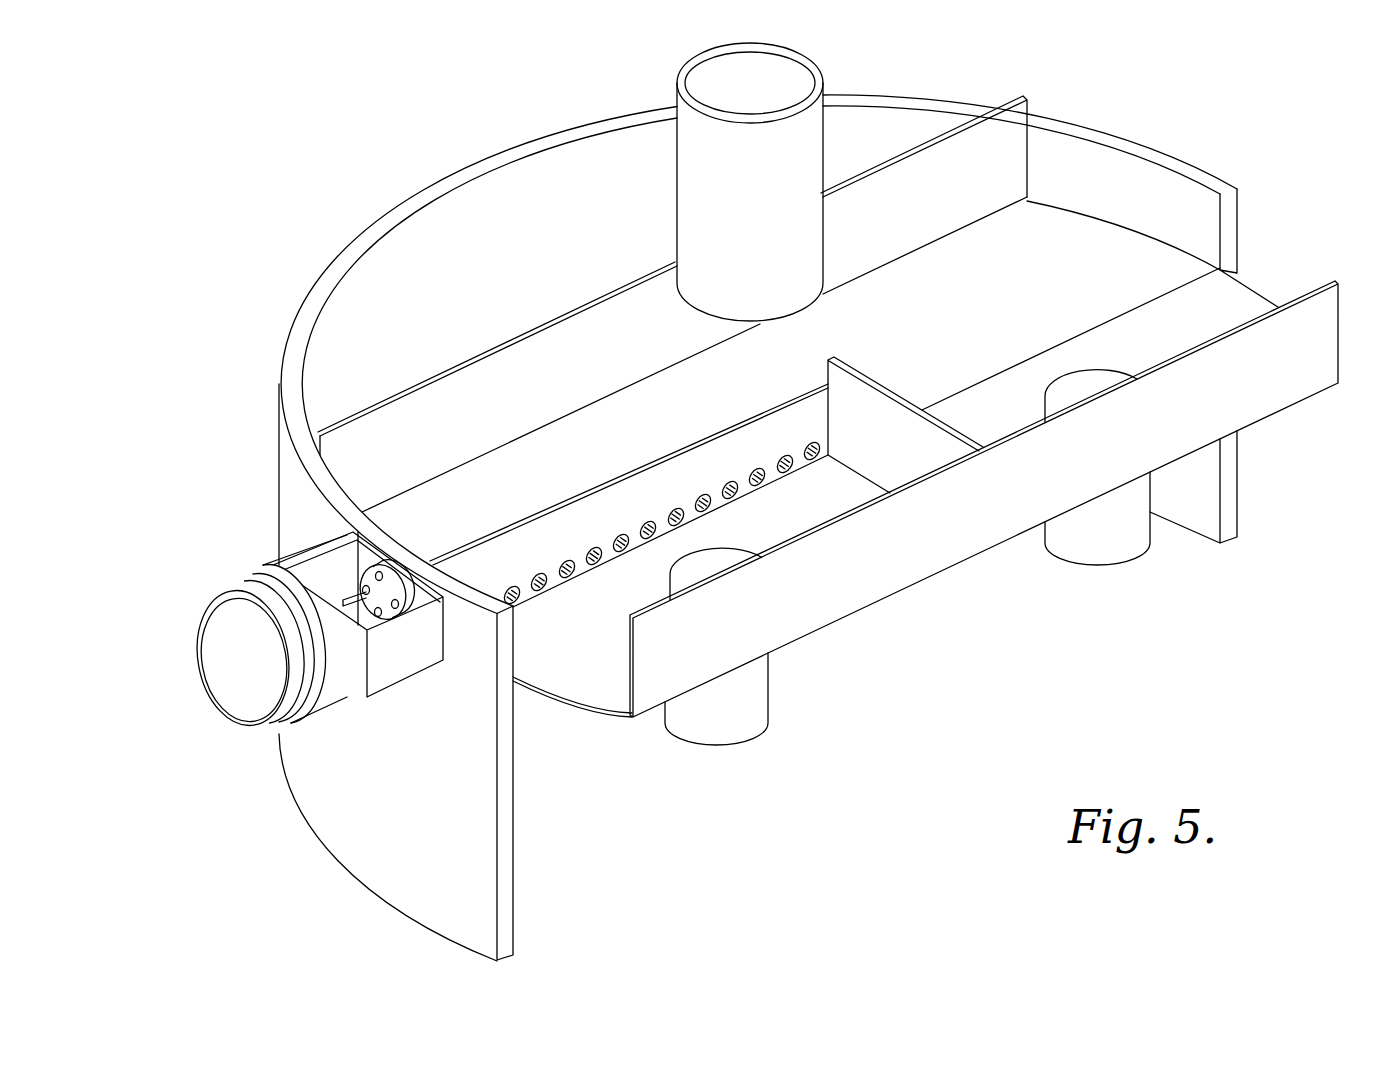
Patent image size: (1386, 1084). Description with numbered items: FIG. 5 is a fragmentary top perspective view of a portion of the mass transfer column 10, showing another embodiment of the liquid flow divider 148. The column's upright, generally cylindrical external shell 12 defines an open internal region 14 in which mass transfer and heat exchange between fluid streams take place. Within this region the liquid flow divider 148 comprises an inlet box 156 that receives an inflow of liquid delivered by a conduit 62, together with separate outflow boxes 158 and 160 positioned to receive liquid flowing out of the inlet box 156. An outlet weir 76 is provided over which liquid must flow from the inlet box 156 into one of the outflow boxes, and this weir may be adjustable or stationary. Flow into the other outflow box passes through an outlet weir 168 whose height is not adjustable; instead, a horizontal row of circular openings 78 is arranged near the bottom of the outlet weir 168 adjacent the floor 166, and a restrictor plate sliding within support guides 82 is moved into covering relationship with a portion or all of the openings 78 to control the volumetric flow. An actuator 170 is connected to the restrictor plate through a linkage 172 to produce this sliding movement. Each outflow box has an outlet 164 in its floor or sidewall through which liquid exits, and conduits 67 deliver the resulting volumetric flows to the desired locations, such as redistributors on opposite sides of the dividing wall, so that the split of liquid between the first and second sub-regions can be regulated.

The mass transfer column 10 is at (340, 235).
The external shell 12 is at (512, 145).
The open internal region 14 is at (600, 163).
The conduit 62 is at (800, 73).
The conduits 67 is at (745, 723).
The outlet weir 76 is at (1040, 298).
The openings 78 is at (737, 487).
The support guides 82 is at (517, 522).
The liquid flow divider 148 is at (868, 355).
The inlet box 156 is at (1092, 158).
The outflow box 158 is at (688, 483).
The outflow box 160 is at (1186, 247).
The outlet 164 is at (700, 561).
The floor 166 is at (553, 680).
The outlet weir 168 is at (773, 430).
The actuator 170 is at (228, 682).
The linkage 172 is at (360, 605).